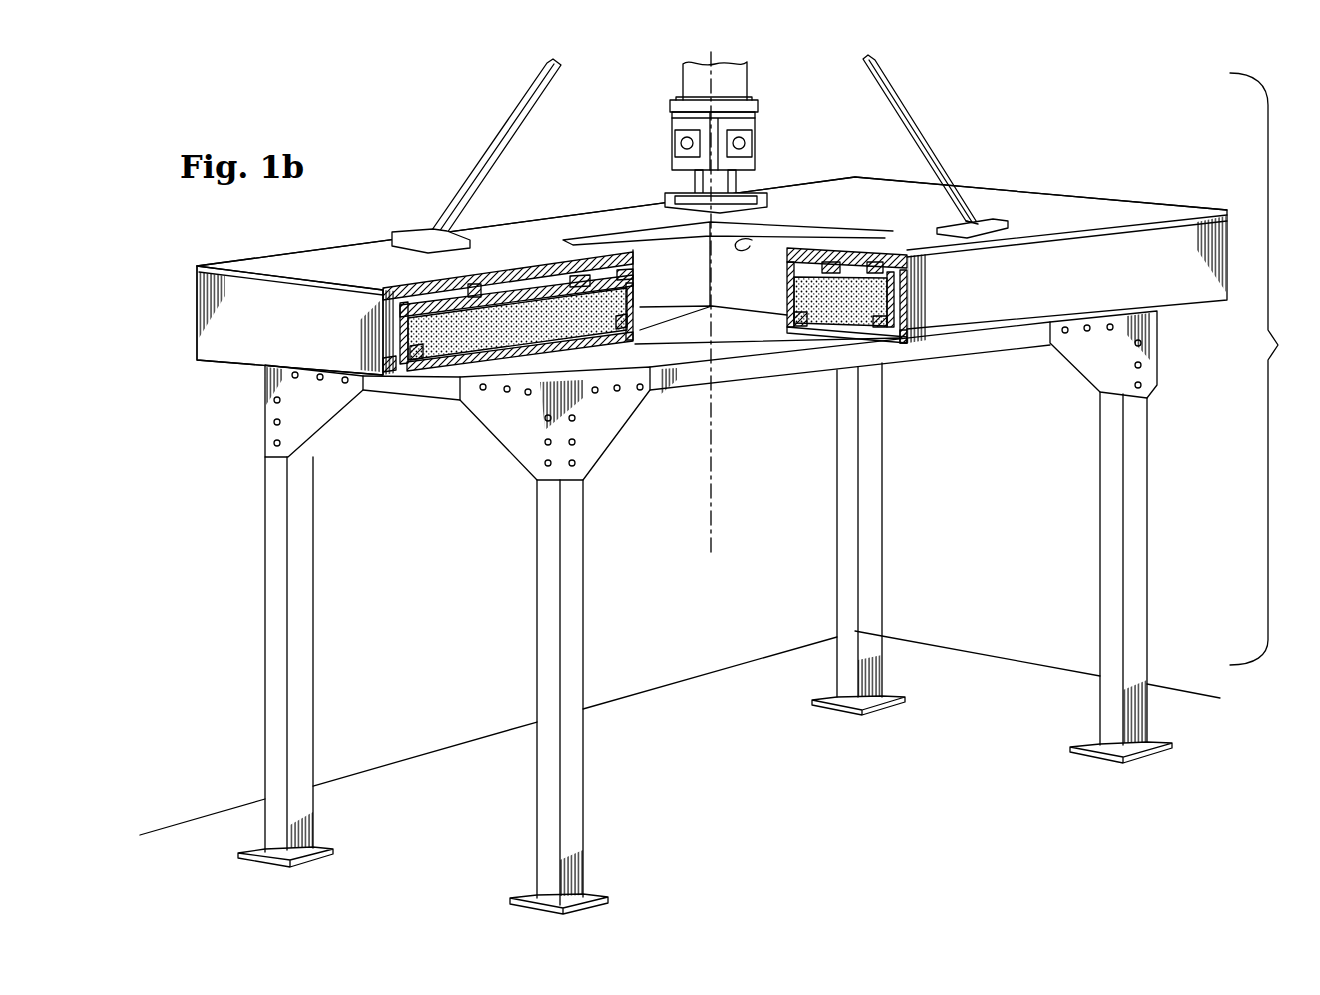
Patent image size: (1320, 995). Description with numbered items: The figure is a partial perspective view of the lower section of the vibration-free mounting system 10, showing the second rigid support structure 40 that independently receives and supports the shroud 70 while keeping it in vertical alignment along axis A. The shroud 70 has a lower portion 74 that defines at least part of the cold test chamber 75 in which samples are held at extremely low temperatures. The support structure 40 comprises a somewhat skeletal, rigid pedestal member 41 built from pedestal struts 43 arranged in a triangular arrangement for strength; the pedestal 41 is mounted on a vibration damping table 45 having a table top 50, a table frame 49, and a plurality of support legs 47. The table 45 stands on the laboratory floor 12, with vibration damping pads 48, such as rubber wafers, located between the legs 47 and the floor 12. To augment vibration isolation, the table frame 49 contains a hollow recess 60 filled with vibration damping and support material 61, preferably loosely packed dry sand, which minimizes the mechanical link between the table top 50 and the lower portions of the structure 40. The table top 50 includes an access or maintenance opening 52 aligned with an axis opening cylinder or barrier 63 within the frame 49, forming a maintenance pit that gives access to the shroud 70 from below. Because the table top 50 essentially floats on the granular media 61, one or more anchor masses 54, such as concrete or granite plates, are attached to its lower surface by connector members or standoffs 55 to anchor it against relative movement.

The mounting system 10 is at (1273, 369).
The floor 12 is at (748, 823).
The second rigid support structure 40 is at (1052, 178).
The pedestal member 41 is at (940, 140).
The pedestal struts 43 is at (497, 139).
The vibration damping table 45 is at (197, 373).
The support legs 47 is at (300, 493).
The vibration damping pads 48 is at (828, 697).
The table frame 49 is at (272, 323).
The table top 50 is at (533, 230).
The access or maintenance opening 52 is at (740, 242).
The anchor masses 54 is at (523, 293).
The connector members or standoffs 55 is at (470, 285).
The hollow recess 60 is at (848, 283).
The vibration damping and support material 61 is at (634, 292).
The axis opening cylinder or barrier 63 is at (753, 294).
The shroud 70 is at (762, 82).
The lower portion 74 is at (762, 125).
The cold test chamber 75 is at (742, 163).
The axis A is at (713, 452).